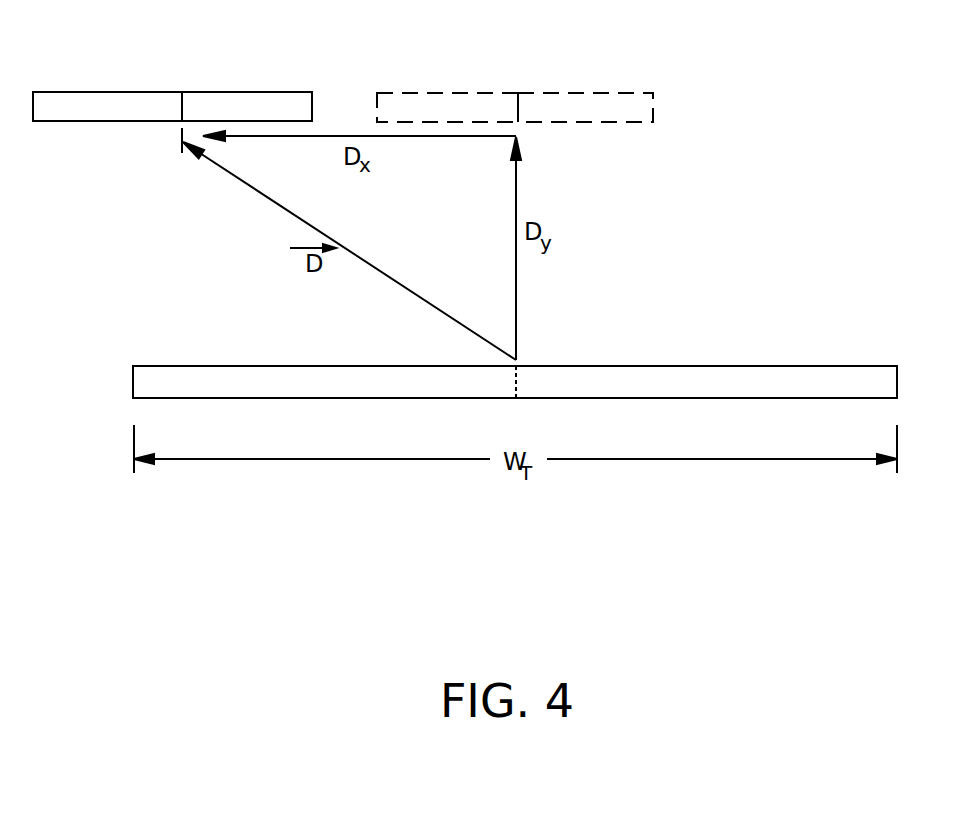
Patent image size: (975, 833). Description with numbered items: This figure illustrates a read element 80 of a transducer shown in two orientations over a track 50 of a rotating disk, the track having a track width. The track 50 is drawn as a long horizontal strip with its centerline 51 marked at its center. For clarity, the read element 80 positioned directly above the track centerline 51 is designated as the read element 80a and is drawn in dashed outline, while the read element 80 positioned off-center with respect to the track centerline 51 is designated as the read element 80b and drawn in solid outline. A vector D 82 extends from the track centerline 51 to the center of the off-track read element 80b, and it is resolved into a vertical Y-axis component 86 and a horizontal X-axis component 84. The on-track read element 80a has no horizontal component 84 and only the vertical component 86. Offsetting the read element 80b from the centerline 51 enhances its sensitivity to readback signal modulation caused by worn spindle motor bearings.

The read element 80 is at (285, 92).
The read element (off-track orientation) 80b is at (107, 92).
The read element (on-track orientation) 80a is at (548, 93).
The horizontal X-axis component Dx 84 is at (440, 137).
The vector D 82 is at (258, 190).
The vertical Y-axis component Dy 86 is at (516, 287).
The track 50 is at (843, 365).
The track centerline 51 is at (516, 398).